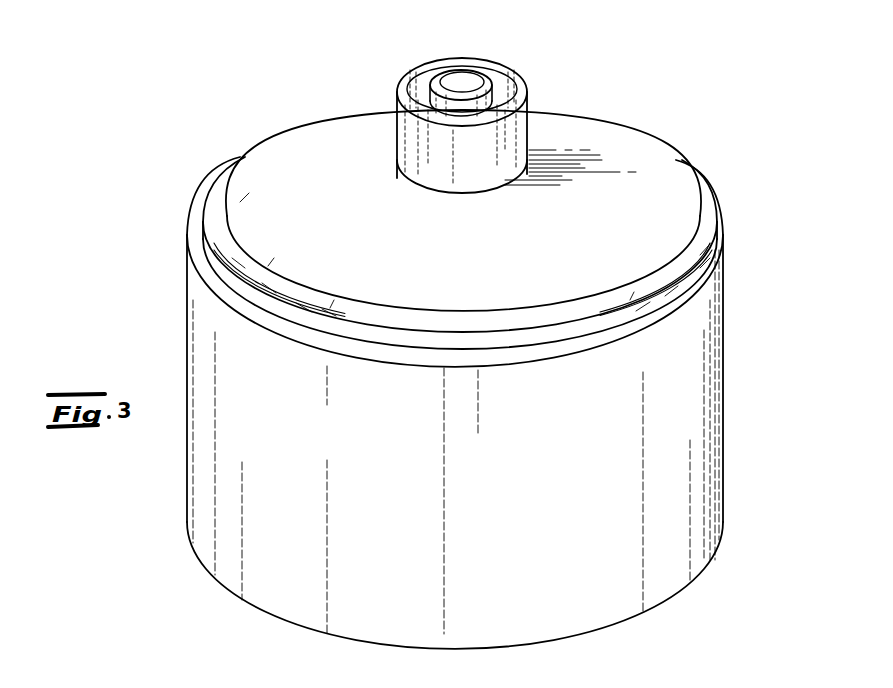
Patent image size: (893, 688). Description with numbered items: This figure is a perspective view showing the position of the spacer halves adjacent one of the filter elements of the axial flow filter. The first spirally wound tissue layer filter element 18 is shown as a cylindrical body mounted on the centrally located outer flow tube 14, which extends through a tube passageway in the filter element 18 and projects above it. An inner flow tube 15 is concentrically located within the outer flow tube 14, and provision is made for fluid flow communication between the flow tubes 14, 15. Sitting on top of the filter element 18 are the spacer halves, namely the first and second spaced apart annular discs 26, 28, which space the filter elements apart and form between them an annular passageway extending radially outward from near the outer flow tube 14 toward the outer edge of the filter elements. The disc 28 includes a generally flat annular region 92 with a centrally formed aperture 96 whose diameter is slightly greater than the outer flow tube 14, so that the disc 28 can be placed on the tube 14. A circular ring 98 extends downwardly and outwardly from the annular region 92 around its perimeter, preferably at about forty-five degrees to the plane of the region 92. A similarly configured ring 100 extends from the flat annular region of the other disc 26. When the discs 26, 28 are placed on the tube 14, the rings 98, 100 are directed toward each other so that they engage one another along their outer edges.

The outer flow tube 14 is at (517, 68).
The inner flow tube 15 is at (473, 72).
The first spirally wound tissue layer filter element 18 is at (219, 458).
The first annular disc 26 is at (243, 274).
The second annular disc 28 is at (281, 168).
The flat annular region 92 is at (638, 150).
The aperture 96 is at (530, 172).
The circular ring 98 is at (687, 247).
The ring 100 is at (673, 290).